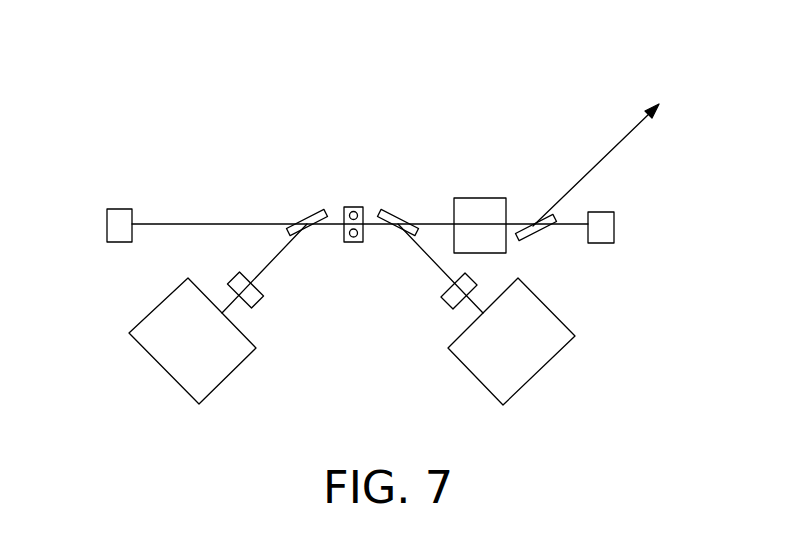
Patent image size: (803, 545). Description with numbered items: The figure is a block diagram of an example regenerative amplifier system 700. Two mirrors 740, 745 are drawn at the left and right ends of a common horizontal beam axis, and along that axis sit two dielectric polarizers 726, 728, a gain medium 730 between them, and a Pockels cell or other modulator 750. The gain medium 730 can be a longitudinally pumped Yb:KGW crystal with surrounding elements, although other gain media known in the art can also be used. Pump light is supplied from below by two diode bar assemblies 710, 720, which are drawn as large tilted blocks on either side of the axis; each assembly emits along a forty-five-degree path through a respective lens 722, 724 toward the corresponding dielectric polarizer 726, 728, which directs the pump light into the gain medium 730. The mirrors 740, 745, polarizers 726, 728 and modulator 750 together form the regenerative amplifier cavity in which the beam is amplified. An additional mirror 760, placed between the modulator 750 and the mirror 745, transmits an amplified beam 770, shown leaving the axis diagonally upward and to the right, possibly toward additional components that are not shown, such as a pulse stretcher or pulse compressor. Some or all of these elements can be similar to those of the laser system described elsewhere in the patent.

The regenerative amplifier system 700 is at (222, 107).
The diode bar assembly 710 is at (235, 370).
The diode bar assembly 720 is at (460, 367).
The lens 722 is at (263, 298).
The lens 724 is at (443, 300).
The dielectric polarizer 726 is at (308, 210).
The dielectric polarizer 728 is at (397, 210).
The gain medium 730 is at (355, 207).
The mirror 740 is at (120, 209).
The mirror 745 is at (614, 233).
The Pockels cell or other modulator 750 is at (485, 198).
The additional mirror 760 is at (532, 237).
The amplified beam 770 is at (602, 160).